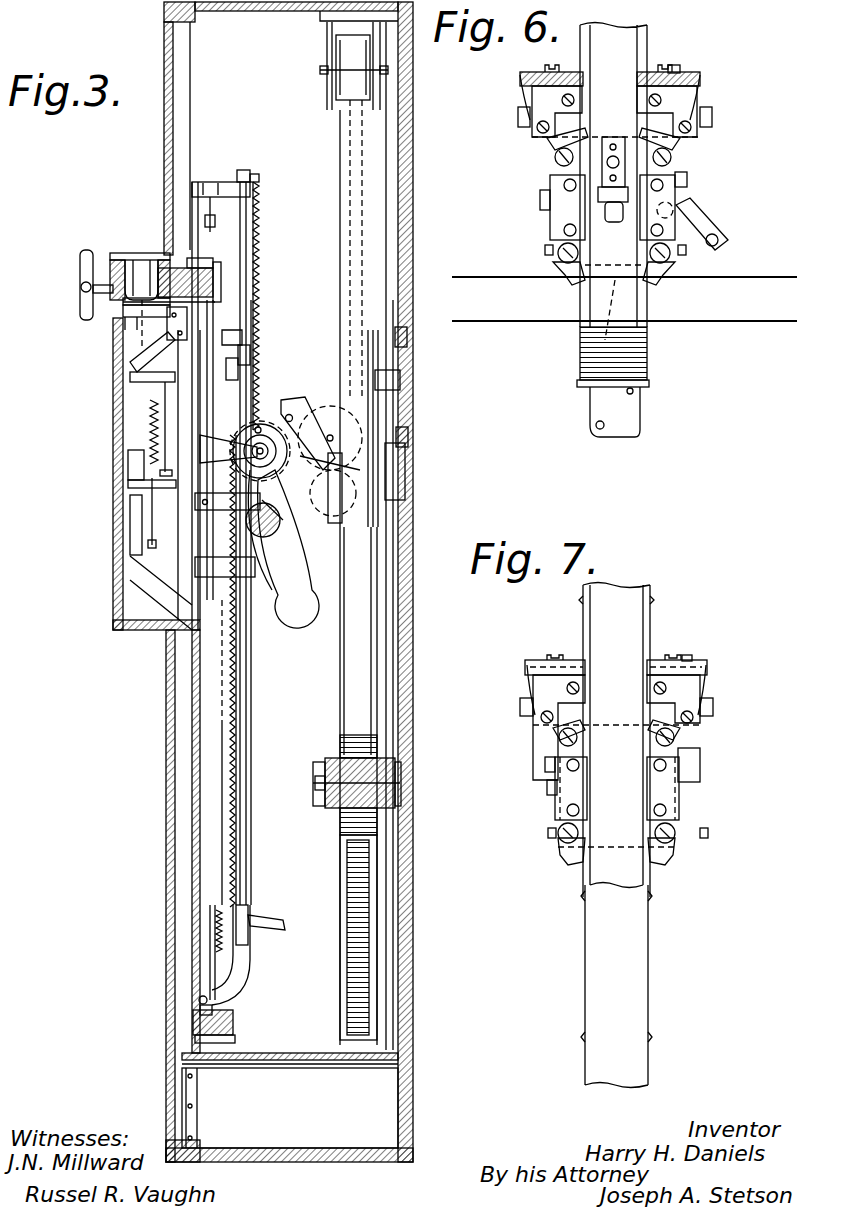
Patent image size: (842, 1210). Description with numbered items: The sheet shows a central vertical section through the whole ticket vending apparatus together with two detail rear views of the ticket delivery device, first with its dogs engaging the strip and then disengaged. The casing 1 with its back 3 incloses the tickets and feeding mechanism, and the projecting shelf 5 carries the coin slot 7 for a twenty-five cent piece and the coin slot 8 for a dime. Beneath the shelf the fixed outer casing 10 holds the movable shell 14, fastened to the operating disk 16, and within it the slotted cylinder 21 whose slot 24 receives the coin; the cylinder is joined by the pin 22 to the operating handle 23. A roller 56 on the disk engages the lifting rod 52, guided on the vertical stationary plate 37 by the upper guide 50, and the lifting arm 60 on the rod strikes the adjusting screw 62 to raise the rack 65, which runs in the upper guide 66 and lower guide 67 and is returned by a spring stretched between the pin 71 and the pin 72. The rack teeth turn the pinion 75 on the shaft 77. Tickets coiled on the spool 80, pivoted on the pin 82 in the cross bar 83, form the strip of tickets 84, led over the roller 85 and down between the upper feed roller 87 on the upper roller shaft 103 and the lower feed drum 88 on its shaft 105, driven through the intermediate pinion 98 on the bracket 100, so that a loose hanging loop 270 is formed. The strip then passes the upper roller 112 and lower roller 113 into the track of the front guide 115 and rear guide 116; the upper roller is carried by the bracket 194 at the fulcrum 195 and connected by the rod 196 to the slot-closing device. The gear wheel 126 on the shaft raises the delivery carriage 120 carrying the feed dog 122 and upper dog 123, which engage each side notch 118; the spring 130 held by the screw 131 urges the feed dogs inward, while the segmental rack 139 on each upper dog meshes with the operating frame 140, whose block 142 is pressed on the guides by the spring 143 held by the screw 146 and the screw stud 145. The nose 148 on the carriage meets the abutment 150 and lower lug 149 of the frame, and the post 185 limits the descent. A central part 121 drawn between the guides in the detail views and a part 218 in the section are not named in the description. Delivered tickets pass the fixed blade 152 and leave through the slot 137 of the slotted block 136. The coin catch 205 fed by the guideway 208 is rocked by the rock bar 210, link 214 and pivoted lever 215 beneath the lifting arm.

In FIG. 3, the casing 1 is at (232, 66).
In FIG. 3, the back 3 is at (413, 700).
In FIG. 3, the projecting shelf 5 is at (117, 256).
In FIG. 3, the coin slot 7 is at (138, 253).
In FIG. 3, the coin slot 8 is at (166, 113).
In FIG. 3, the outer casing 10 is at (167, 335).
In FIG. 3, the movable shell 14 is at (140, 320).
In FIG. 3, the operating disk 16 is at (212, 257).
In FIG. 3, the slotted cylinder 21 is at (125, 310).
In FIG. 3, the pin 22 is at (80, 287).
In FIG. 3, the operating handle 23 is at (80, 258).
In FIG. 3, the slot 24 is at (110, 300).
In FIG. 3, the vertical stationary plate 37 is at (190, 195).
In FIG. 3, the upper guide 50 is at (210, 183).
In FIG. 3, the lifting rod 52 is at (215, 290).
In FIG. 3, the roller 56 is at (215, 222).
In FIG. 3, the lifting arm 60 is at (240, 368).
In FIG. 3, the adjusting screw 62 is at (243, 355).
In FIG. 3, the rack 65 is at (253, 238).
In FIG. 3, the upper guide 66 is at (240, 190).
In FIG. 3, the lower guide 67 is at (258, 600).
In FIG. 3, the pin 71 is at (255, 182).
In FIG. 3, the pin 72 is at (258, 300).
In FIG. 3, the pinion 75 is at (275, 466).
In FIG. 3, the shaft 77 is at (268, 463).
In FIG. 3, the spool 80 is at (338, 980).
In FIG. 3, the pin 82 is at (401, 767).
In FIG. 3, the cross bar 83 is at (323, 808).
In FIG. 3, the strip of tickets 84 is at (355, 200).
In FIG. 6, the strip of tickets 84 is at (583, 335).
In FIG. 7, the strip of tickets 84 is at (612, 1006).
In FIG. 3, the roller 85 is at (336, 58).
In FIG. 3, the upper feed roller 87 is at (330, 458).
In FIG. 3, the lower feed drum 88 is at (380, 470).
In FIG. 3, the intermediate pinion 98 is at (288, 403).
In FIG. 3, the bracket 100 is at (333, 426).
In FIG. 3, the upper roller shaft 103 is at (333, 440).
In FIG. 3, the shaft 105 is at (345, 498).
In FIG. 3, the upper roller 112 is at (258, 508).
In FIG. 3, the lower roller 113 is at (268, 545).
In FIG. 3, the front guide 115 is at (240, 743).
In FIG. 3, the rear guide 116 is at (246, 725).
In FIG. 6, the rear guide 116 is at (618, 412).
In FIG. 7, the rear guide 116 is at (620, 627).
In FIG. 6, the side notch 118 is at (650, 380).
In FIG. 7, the side notch 118 is at (652, 603).
In FIG. 3, the delivery carriage 120 is at (248, 940).
In FIG. 6, the delivery carriage 120 is at (560, 175).
In FIG. 7, the delivery carriage 120 is at (665, 800).
In FIG. 6, the plate 121 is at (613, 137).
In FIG. 6, the feed dog 122 is at (575, 272).
In FIG. 7, the feed dog 122 is at (665, 862).
In FIG. 6, the upper dog 123 is at (668, 146).
In FIG. 7, the upper dog 123 is at (668, 724).
In FIG. 3, the gear wheel 126 is at (258, 430).
In FIG. 3, the spring 130 is at (286, 924).
In FIG. 6, the spring 130 is at (563, 264).
In FIG. 7, the spring 130 is at (672, 840).
In FIG. 6, the screw 131 is at (548, 252).
In FIG. 7, the screw 131 is at (705, 832).
In FIG. 3, the slotted block 136 is at (193, 1017).
In FIG. 3, the slot 137 is at (195, 1008).
In FIG. 6, the segmental rack 139 is at (672, 158).
In FIG. 7, the segmental rack 139 is at (558, 742).
In FIG. 6, the operating frame 140 is at (680, 100).
In FIG. 7, the operating frame 140 is at (545, 685).
In FIG. 6, the block 142 is at (530, 72).
In FIG. 7, the block 142 is at (573, 660).
In FIG. 6, the spring 143 is at (695, 85).
In FIG. 7, the spring 143 is at (528, 680).
In FIG. 6, the screw stud 145 is at (674, 70).
In FIG. 7, the screw stud 145 is at (685, 665).
In FIG. 6, the screw 146 is at (705, 117).
In FIG. 7, the screw 146 is at (712, 705).
In FIG. 6, the nose 148 is at (682, 175).
In FIG. 7, the nose 148 is at (548, 760).
In FIG. 6, the lower lug 149 is at (545, 192).
In FIG. 7, the lower lug 149 is at (548, 783).
In FIG. 6, the abutment 150 is at (614, 224).
In FIG. 7, the abutment 150 is at (700, 762).
In FIG. 3, the fixed blade 152 is at (187, 1030).
In FIG. 3, the post 185 is at (229, 760).
In FIG. 6, the post 185 is at (705, 208).
In FIG. 3, the bracket 194 is at (192, 515).
In FIG. 3, the fulcrum 195 is at (170, 507).
In FIG. 3, the rod 196 is at (152, 420).
In FIG. 3, the coin catch 205 is at (170, 470).
In FIG. 3, the guideway 208 is at (135, 365).
In FIG. 3, the rock bar 210 is at (150, 478).
In FIG. 3, the link 214 is at (165, 403).
In FIG. 3, the pivoted lever 215 is at (142, 377).
In FIG. 3, the block 218 is at (145, 437).
In FIG. 3, the loose hanging loop 270 is at (313, 628).